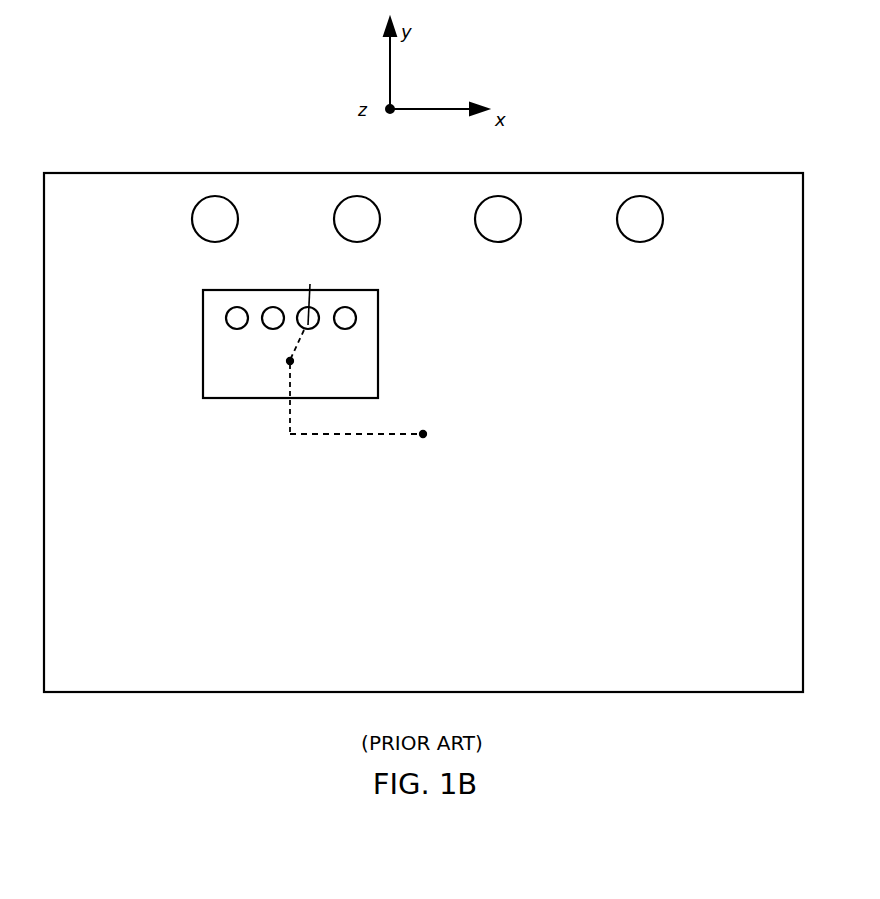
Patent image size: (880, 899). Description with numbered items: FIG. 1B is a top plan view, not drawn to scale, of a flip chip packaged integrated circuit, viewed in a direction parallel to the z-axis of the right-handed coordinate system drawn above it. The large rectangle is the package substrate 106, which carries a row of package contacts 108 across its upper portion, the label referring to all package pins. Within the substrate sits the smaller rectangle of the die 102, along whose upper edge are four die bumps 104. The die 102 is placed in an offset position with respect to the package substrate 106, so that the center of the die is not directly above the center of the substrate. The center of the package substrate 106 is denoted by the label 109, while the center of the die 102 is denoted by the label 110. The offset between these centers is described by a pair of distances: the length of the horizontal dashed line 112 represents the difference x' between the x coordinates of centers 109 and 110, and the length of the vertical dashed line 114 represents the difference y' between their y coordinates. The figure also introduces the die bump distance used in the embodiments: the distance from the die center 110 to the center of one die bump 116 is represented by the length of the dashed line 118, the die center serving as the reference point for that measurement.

The die 102 is at (203, 314).
The die bumps 104 is at (358, 314).
The package substrate 106 is at (247, 173).
The package contacts 108 is at (193, 212).
The center of package substrate 109 is at (481, 344).
The die center 110 is at (287, 361).
The dashed line 112 is at (334, 436).
The dashed line 114 is at (288, 434).
The die bump 116 is at (311, 292).
The dashed line 118 is at (297, 350).